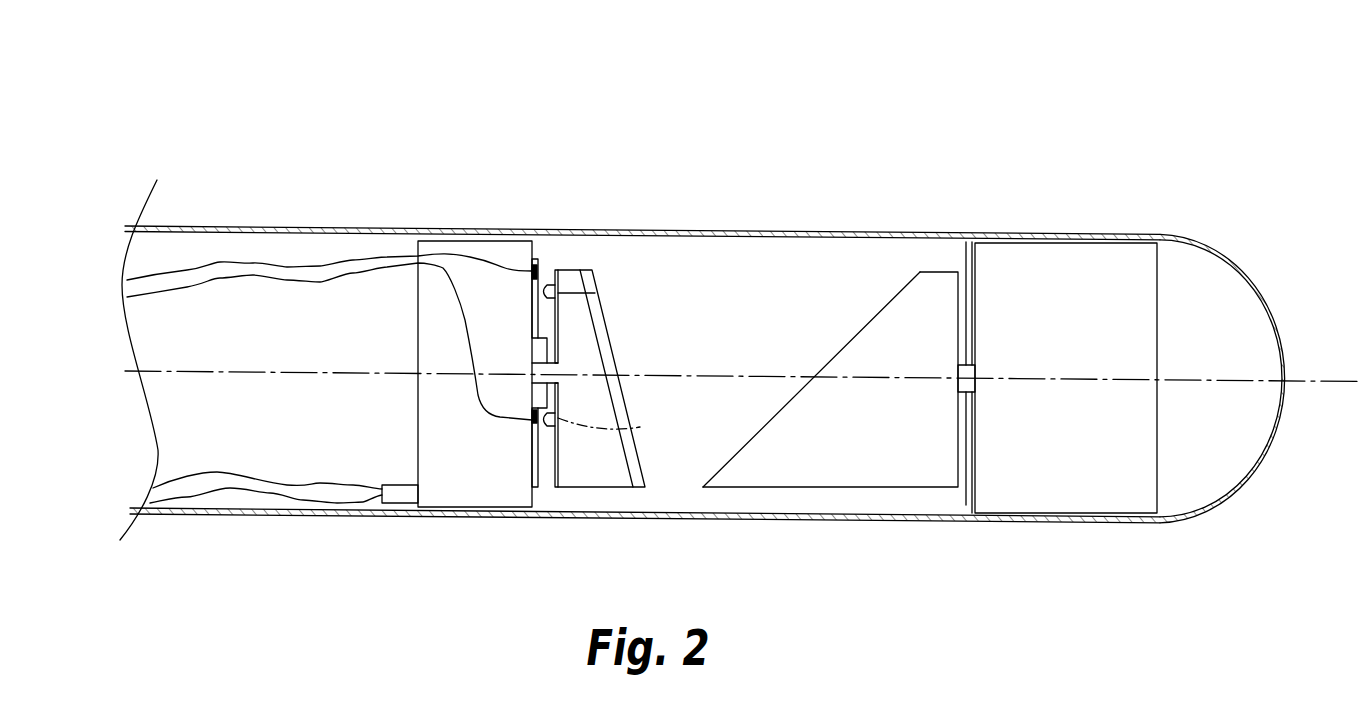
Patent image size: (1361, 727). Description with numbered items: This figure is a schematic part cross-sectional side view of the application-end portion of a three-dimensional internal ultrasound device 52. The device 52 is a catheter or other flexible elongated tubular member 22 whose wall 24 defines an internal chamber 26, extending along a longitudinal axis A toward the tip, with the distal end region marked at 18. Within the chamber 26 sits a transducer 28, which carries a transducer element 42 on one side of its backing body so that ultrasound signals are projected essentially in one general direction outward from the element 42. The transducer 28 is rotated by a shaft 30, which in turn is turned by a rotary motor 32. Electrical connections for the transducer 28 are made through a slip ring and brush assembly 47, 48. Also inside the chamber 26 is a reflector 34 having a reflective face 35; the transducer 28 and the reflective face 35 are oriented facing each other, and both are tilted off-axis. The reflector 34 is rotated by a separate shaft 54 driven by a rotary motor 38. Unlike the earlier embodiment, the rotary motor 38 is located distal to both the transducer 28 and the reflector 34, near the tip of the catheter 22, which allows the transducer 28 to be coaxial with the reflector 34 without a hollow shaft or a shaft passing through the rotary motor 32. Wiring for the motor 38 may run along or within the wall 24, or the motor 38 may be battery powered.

The distal end of longitudinal axis 18 is at (1353, 378).
The longitudinal axis A is at (1322, 383).
The tubular member 22 is at (243, 227).
The wall 24 is at (1245, 278).
The internal chamber 26 is at (687, 450).
The transducer 28 is at (615, 336).
The shaft 30 is at (548, 345).
The rotary motor 32 is at (505, 255).
The reflector 34 is at (892, 443).
The reflective face 35 is at (860, 331).
The rotary motor 38 is at (1097, 488).
The transducer element 42 is at (595, 293).
The slip ring 47 is at (557, 447).
The brush 48 is at (545, 281).
The device 52 is at (605, 91).
The shaft 54 is at (967, 242).